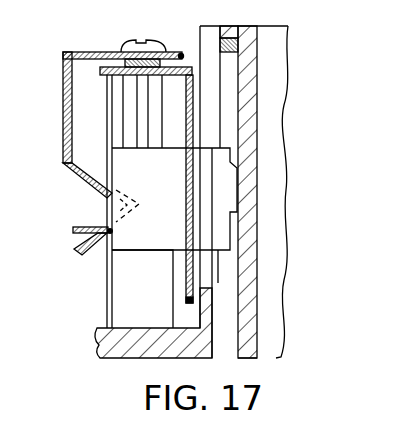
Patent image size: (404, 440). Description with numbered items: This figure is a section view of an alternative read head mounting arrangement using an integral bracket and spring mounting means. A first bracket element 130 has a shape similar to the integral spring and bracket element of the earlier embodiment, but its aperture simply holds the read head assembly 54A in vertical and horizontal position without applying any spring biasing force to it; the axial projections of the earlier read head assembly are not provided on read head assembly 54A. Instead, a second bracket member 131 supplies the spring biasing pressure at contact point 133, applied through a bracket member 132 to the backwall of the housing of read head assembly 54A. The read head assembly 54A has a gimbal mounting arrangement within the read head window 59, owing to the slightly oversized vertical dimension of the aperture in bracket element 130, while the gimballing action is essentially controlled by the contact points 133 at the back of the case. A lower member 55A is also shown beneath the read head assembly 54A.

The first bracket element 130 is at (181, 52).
The second bracket member 131 is at (62, 88).
The bracket member 132 is at (63, 143).
The contact point 133 is at (107, 196).
The read head assembly 54A is at (139, 172).
The lower member 55A is at (128, 263).
The read head window 59 is at (206, 290).